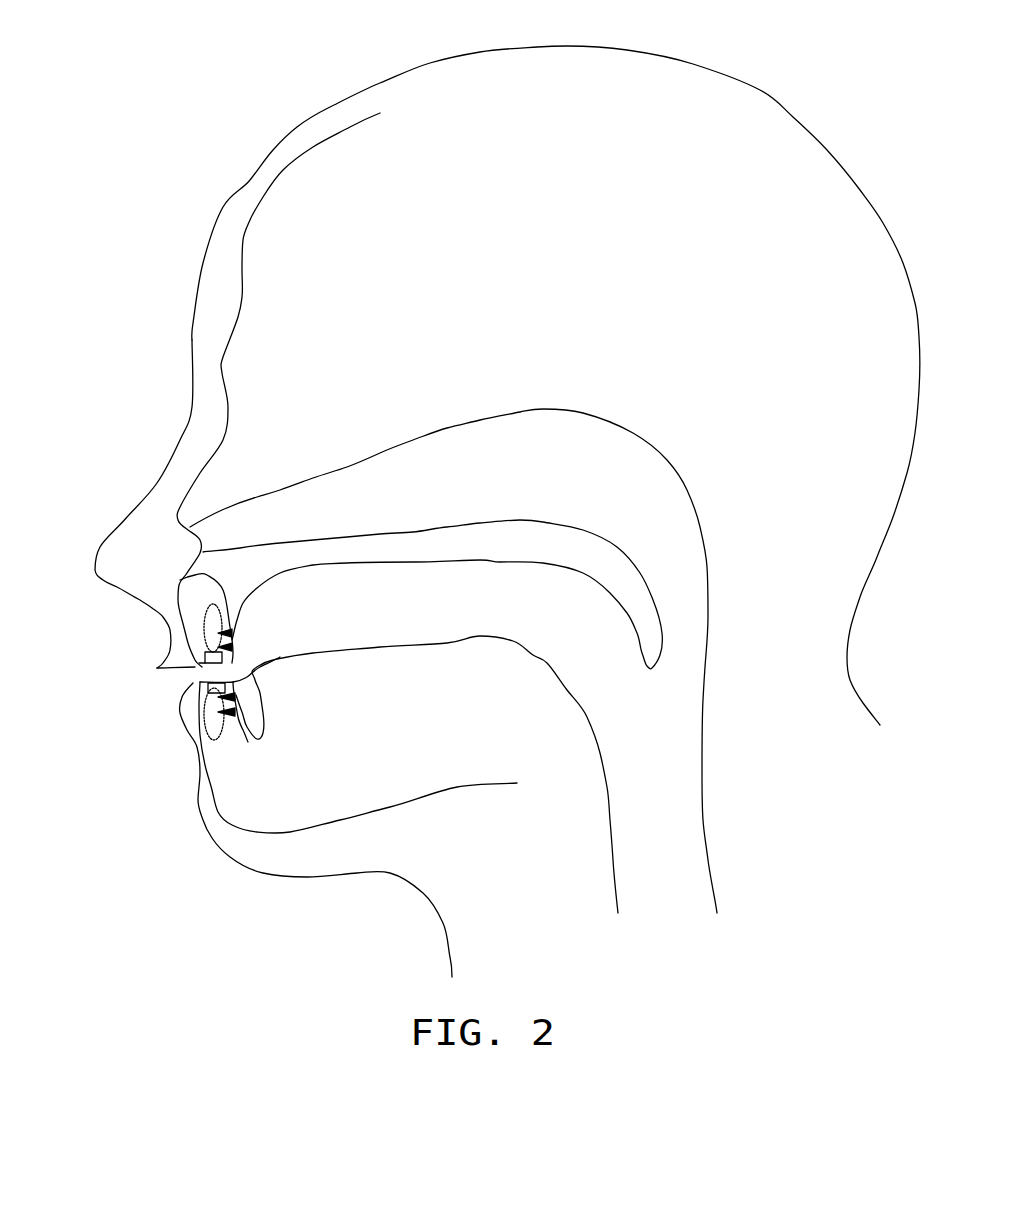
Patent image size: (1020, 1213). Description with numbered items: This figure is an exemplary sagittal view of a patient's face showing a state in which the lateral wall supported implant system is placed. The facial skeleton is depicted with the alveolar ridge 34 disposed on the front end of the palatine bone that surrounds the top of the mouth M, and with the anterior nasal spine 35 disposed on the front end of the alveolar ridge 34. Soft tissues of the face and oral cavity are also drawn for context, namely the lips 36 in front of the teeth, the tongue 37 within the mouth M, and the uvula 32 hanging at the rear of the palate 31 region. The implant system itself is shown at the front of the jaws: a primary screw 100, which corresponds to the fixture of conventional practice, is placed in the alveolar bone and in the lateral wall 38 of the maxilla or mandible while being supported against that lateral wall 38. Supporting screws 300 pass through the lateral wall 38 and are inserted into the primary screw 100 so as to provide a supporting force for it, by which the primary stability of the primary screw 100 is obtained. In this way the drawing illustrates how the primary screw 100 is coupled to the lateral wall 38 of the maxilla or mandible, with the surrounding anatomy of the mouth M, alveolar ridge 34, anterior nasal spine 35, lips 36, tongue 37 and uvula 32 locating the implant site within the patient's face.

The soft palate 31 is at (615, 567).
The uvula 32 is at (662, 653).
The alveolar ridge 34 is at (287, 572).
The anterior nasal spine 35 is at (152, 607).
The lips 36 is at (193, 683).
The tongue 37 is at (253, 670).
The lateral wall 38 is at (213, 580).
The primary screw 100 is at (207, 643).
The supporting screws 300 is at (188, 587).
The mouth M is at (520, 612).